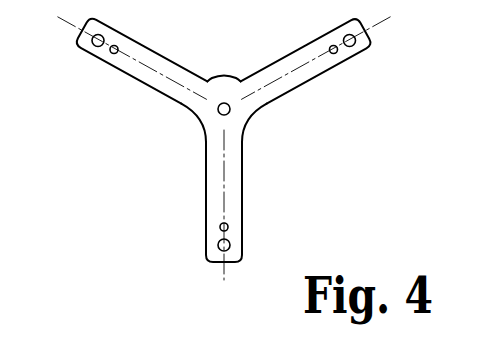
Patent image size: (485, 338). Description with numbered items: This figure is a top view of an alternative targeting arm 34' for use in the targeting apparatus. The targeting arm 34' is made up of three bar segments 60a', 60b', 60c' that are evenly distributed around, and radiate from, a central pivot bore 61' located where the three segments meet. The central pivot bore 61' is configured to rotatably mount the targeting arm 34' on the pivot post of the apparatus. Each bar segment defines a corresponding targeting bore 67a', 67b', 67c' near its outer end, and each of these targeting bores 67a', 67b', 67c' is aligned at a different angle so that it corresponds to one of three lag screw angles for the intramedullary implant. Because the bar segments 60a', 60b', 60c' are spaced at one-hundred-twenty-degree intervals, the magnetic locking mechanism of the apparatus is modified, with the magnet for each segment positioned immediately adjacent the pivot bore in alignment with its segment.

The targeting arm 34' is at (201, 131).
The bar segment 60a' is at (133, 59).
The bar segment 60b' is at (316, 56).
The bar segment 60c' is at (256, 205).
The central pivot bore 61' is at (186, 120).
The targeting bore 67a' is at (71, 68).
The targeting bore 67b' is at (373, 64).
The targeting bore 67c' is at (263, 237).